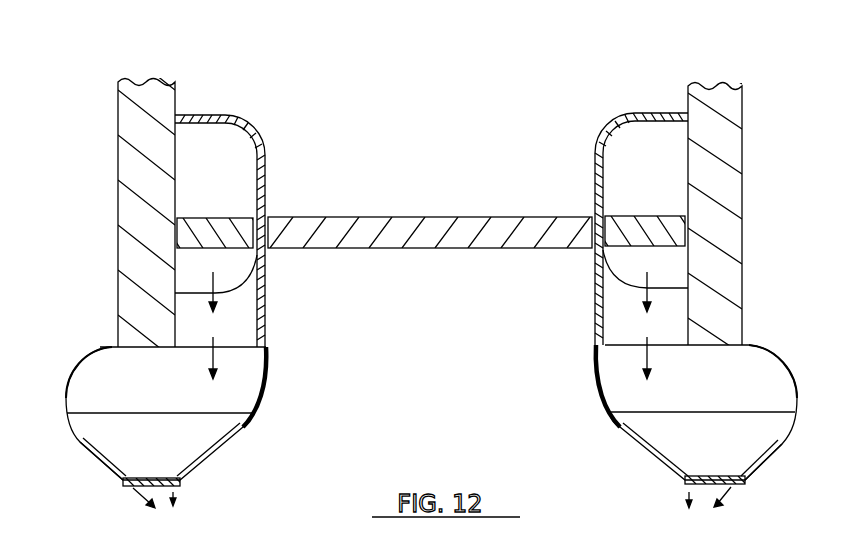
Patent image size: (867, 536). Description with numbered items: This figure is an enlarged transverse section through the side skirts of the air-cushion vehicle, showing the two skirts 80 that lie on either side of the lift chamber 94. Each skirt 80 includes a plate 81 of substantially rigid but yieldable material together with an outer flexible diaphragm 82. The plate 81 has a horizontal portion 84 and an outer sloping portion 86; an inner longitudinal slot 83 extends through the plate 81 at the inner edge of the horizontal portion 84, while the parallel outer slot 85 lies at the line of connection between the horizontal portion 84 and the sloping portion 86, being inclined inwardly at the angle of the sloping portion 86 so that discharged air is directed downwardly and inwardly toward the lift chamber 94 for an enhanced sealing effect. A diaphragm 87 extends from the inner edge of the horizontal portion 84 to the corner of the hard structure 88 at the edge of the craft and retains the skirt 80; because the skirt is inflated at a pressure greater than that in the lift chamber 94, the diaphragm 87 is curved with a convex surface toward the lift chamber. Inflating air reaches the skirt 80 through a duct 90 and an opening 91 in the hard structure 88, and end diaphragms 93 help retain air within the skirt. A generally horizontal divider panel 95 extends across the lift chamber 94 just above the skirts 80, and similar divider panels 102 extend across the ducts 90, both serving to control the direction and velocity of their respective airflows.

The skirt 80 is at (272, 380).
The plate 81 is at (104, 478).
The outer flexible diaphragm 82 is at (96, 352).
The inner longitudinal slot 83 is at (182, 486).
The horizontal portion 84 is at (152, 478).
The outer slot 85 is at (132, 488).
The outer sloping portion 86 is at (80, 452).
The diaphragm 87 is at (254, 420).
The hard structure 88 is at (268, 333).
The duct 90 is at (240, 121).
The opening 91 is at (252, 308).
The end diaphragm 93 is at (216, 435).
The lift chamber 94 is at (430, 202).
The divider panel 95 is at (476, 217).
The divider panel 102 is at (212, 218).